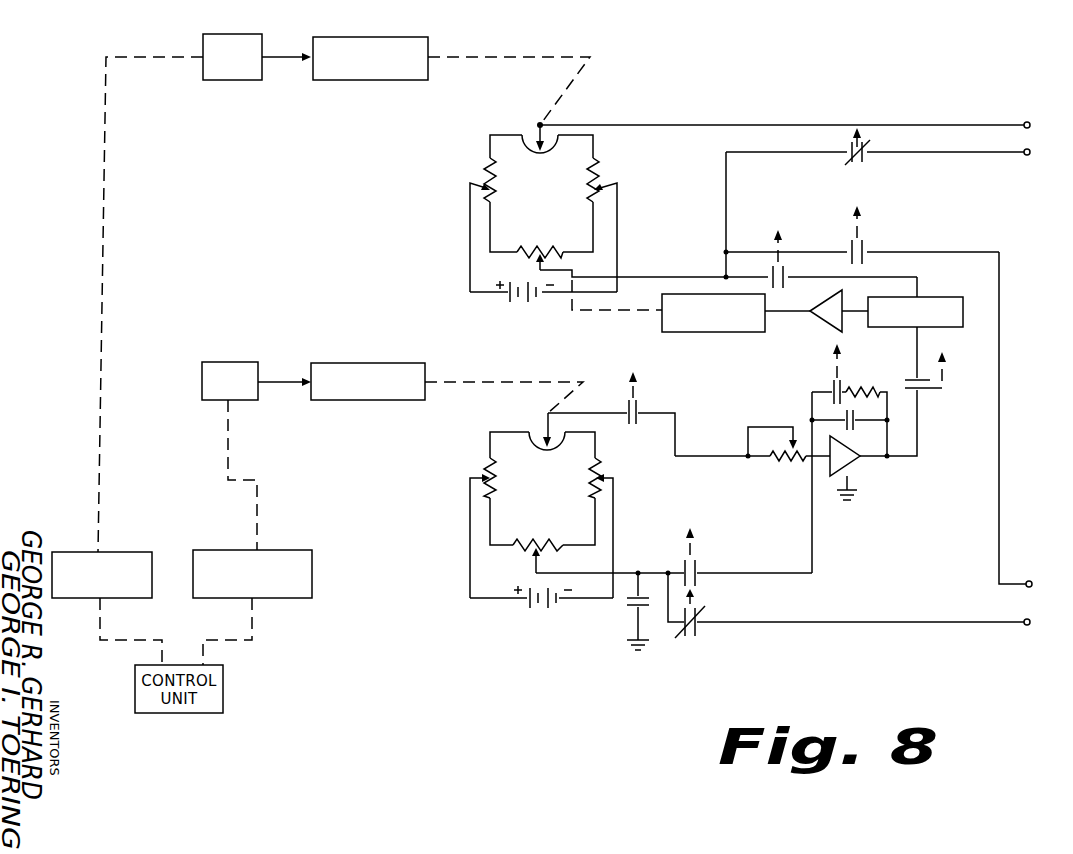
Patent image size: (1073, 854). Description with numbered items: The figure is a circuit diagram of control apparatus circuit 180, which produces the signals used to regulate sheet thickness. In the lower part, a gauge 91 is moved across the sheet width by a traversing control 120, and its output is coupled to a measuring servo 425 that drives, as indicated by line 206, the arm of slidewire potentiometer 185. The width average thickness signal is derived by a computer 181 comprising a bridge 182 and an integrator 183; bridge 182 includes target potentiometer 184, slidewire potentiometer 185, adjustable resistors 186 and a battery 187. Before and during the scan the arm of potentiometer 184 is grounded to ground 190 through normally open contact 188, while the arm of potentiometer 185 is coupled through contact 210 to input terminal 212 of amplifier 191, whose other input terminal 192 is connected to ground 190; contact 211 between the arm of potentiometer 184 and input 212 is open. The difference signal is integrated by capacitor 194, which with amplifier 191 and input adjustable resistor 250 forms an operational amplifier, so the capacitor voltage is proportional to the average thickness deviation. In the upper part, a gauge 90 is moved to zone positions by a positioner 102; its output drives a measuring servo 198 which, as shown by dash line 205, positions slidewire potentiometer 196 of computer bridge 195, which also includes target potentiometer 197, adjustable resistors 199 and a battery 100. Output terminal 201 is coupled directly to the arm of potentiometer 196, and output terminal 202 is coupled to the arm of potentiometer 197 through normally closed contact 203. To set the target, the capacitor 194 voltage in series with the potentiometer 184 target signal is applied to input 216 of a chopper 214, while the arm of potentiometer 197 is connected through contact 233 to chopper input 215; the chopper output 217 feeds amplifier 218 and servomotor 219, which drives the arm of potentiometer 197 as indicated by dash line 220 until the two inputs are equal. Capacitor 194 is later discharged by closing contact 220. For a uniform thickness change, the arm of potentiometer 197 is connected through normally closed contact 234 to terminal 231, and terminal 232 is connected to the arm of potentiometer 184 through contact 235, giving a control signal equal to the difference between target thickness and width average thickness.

The gauge 90 is at (258, 28).
The measuring servo 198 is at (384, 37).
The dash line 205 is at (530, 57).
The slidewire potentiometer 196 is at (534, 126).
The computer bridge 195 is at (502, 162).
The adjustable resistors 199 is at (606, 181).
The target potentiometer 197 is at (530, 264).
The battery 100 is at (508, 298).
The dash line 220 is at (580, 312).
The output terminal 201 is at (1032, 112).
The output terminal 202 is at (1036, 160).
The normally closed contact 203 is at (866, 160).
The normally closed contact 234 is at (866, 246).
The normally opened contact 233 is at (789, 272).
The servomotor 219 is at (700, 332).
The amplifier 218 is at (832, 326).
The chopper output 217 is at (852, 306).
The chopper 214 is at (976, 298).
The chopper input 215 is at (918, 288).
The chopper input 216 is at (920, 343).
The amplifier input terminal 212 is at (910, 372).
The integrator 183 is at (896, 438).
The capacitor 194 is at (830, 414).
The amplifier 191 is at (856, 468).
The amplifier input terminal 192 is at (856, 490).
The ground 190 is at (858, 500).
The input adjustable resistor 250 is at (773, 461).
The normally opened contact 210 is at (644, 404).
The terminal 231 is at (1048, 572).
The terminal 232 is at (1030, 622).
The gauge 91 is at (240, 362).
The measuring servo 425 is at (388, 363).
The line 206 is at (526, 382).
The slidewire potentiometer 185 is at (537, 426).
The bridge 182 is at (516, 466).
The adjustable resistors 186 is at (474, 472).
The target potentiometer 184 is at (524, 560).
The battery 187 is at (526, 600).
The normally open contact 188 is at (628, 610).
The normally opened contact 211 is at (704, 566).
The normally closed contact 235 is at (704, 628).
The computer 181 is at (688, 507).
The control apparatus circuit 180 is at (410, 651).
The positioner 102 is at (130, 550).
The traversing control 120 is at (306, 550).